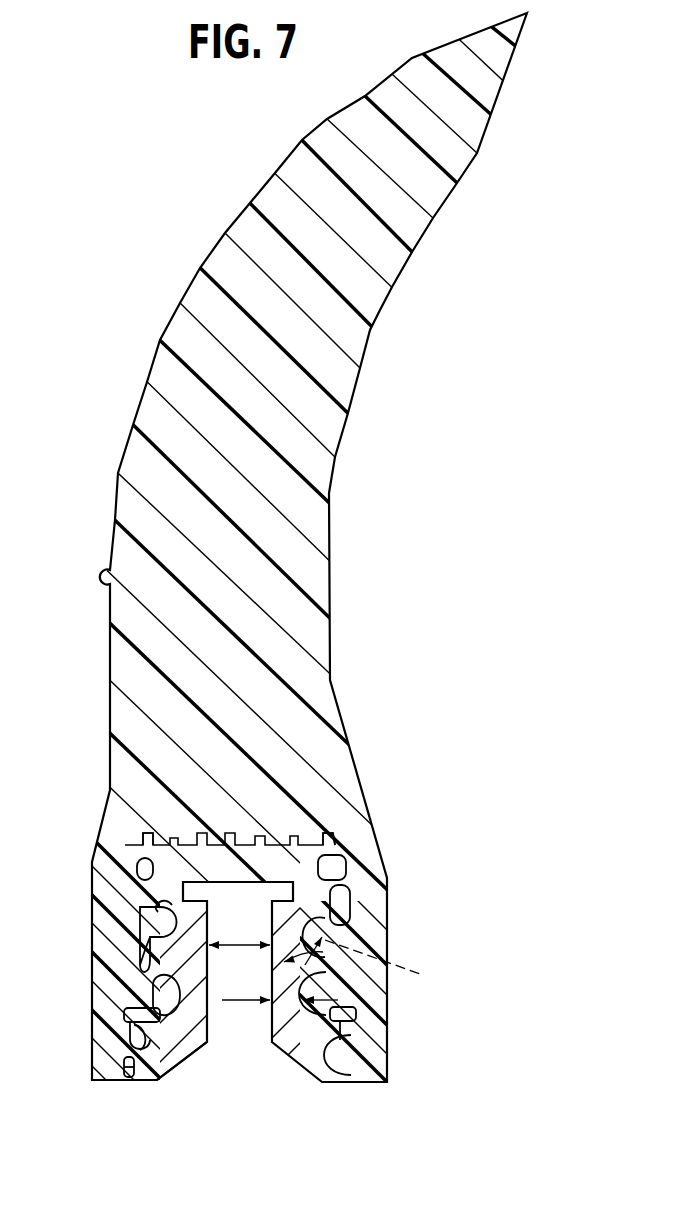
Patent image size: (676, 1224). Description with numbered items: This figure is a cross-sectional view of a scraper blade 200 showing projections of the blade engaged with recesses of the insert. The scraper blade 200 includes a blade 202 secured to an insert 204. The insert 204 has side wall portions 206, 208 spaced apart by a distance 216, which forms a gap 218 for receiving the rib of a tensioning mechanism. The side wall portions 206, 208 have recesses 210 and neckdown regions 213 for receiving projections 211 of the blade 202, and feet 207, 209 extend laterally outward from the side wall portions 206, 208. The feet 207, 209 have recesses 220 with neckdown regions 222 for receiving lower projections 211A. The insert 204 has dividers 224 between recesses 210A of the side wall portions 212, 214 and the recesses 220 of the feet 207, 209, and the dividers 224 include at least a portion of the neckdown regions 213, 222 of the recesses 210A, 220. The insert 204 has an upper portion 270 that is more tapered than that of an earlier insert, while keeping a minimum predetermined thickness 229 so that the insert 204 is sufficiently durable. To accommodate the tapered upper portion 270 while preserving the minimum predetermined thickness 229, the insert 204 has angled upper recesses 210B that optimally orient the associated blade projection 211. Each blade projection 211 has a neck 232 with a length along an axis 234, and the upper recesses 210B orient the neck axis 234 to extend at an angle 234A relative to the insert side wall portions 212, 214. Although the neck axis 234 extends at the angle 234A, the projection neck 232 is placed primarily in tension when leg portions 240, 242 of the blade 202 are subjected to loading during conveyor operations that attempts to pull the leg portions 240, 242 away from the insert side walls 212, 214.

The scraper blade 200 is at (165, 172).
The blade 202 is at (163, 418).
The insert 204 is at (350, 1080).
The side wall portion 206 is at (163, 1065).
The foot 207 is at (118, 1000).
The side wall portion 208 is at (305, 1062).
The foot 209 is at (345, 1002).
The recess 210 is at (145, 877).
The recess 210A is at (193, 1055).
The upper recess 210B is at (385, 860).
The projection 211 is at (150, 943).
The lower projection 211A is at (115, 1073).
The side wall portion 212 is at (140, 905).
The neckdown region 213 is at (147, 987).
The side wall portion 214 is at (350, 918).
The distance 216 is at (239, 920).
The gap 218 is at (220, 1000).
The recess 220 is at (345, 1045).
The neckdown region 222 is at (123, 1077).
The divider 224 is at (125, 1040).
The minimum predetermined thickness 229 is at (243, 1001).
The neck 232 is at (297, 922).
The axis 234 is at (322, 935).
The angle 234A is at (413, 974).
The leg portion 240 is at (117, 835).
The leg portion 242 is at (348, 808).
The upper portion 270 is at (372, 845).